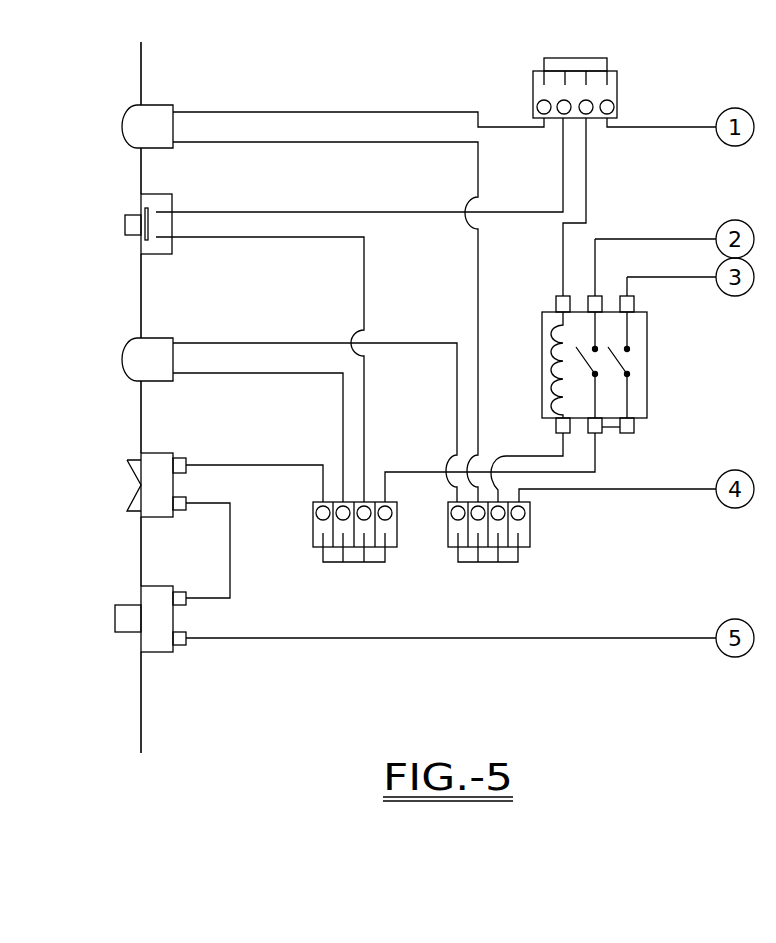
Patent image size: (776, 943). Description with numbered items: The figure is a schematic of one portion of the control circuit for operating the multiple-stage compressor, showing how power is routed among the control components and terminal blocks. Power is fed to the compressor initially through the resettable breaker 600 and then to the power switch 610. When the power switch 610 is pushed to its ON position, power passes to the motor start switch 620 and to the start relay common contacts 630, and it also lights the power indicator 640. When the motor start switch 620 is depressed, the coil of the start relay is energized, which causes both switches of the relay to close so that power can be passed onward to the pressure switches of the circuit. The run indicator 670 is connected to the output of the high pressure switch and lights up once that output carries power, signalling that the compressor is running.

The run indicator 670 is at (122, 128).
The motor start switch 620 is at (125, 225).
The power indicator 640 is at (122, 360).
The power switch 610 is at (141, 485).
The resettable breaker 600 is at (115, 618).
The start relay common contacts 630 is at (648, 369).